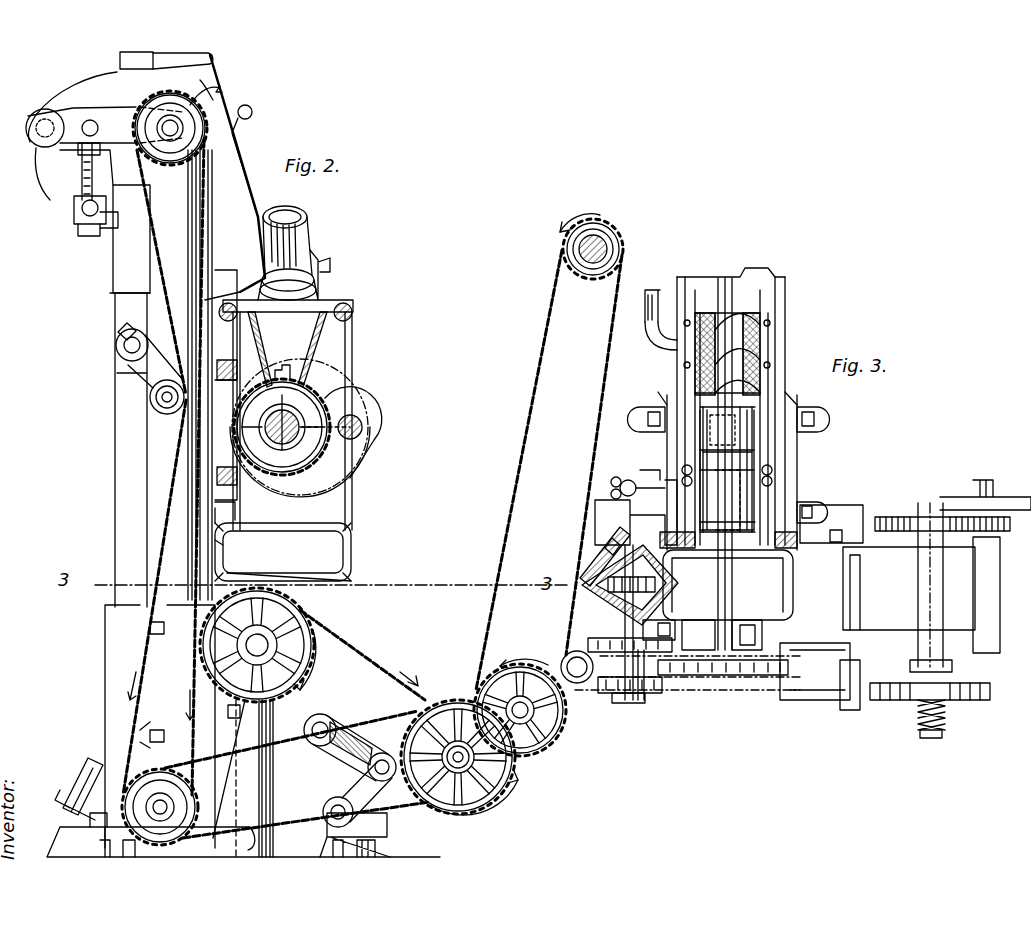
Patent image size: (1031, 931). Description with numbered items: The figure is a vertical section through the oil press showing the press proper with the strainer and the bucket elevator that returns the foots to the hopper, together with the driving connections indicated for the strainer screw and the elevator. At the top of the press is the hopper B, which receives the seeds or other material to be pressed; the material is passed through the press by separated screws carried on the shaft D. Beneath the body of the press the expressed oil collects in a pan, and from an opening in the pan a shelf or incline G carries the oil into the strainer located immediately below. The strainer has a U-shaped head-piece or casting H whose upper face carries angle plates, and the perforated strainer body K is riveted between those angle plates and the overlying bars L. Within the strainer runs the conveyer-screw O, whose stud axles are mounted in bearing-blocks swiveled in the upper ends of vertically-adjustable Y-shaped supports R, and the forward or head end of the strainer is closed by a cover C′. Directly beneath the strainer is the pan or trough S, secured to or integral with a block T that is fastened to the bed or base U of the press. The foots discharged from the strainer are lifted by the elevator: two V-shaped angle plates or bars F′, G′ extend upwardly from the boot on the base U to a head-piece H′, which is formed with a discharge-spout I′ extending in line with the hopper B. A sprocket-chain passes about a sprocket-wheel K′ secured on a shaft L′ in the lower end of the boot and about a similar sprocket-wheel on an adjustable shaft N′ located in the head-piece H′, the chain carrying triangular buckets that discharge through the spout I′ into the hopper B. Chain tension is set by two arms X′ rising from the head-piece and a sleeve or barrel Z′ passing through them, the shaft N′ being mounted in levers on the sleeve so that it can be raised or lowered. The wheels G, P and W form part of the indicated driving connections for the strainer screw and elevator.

In FIG. 2, the arms X′ is at (121, 118).
In FIG. 2, the sleeve or barrel Z′ is at (40, 149).
In FIG. 2, the head-piece H′ is at (200, 90).
In FIG. 2, the adjustable shaft N′ is at (250, 109).
In FIG. 2, the discharge-spout I′ is at (222, 265).
In FIG. 2, the hopper B is at (286, 415).
In FIG. 2, the cutter ring A is at (282, 427).
In FIG. 2, the shaft D is at (352, 462).
In FIG. 2, the cover C′ is at (333, 402).
In FIG. 3, the cover C′ is at (770, 460).
In FIG. 2, the V-shaped angle plate or bar F′ is at (283, 552).
In FIG. 2, the V-shaped angle plate or bar G′ is at (215, 540).
In FIG. 2, the shaft L′ is at (170, 800).
In FIG. 2, the shelf or incline G is at (305, 598).
In FIG. 2, the stud axle or shaft P is at (306, 660).
In FIG. 3, the stud axle or shaft P is at (670, 610).
In FIG. 2, the main wheel W is at (459, 757).
In FIG. 2, the bed or base U is at (243, 807).
In FIG. 3, the bed or base U is at (832, 508).
In FIG. 3, the strainer body K is at (770, 345).
In FIG. 3, the pan or trough S is at (745, 300).
In FIG. 3, the conveyer-screw O is at (730, 318).
In FIG. 3, the overlying bars L is at (792, 318).
In FIG. 3, the block T is at (660, 396).
In FIG. 3, the U-shaped head-piece or casting H is at (790, 560).
In FIG. 3, the Y-shaped supports R is at (790, 610).
In FIG. 3, the sprocket-wheel K′ is at (717, 654).